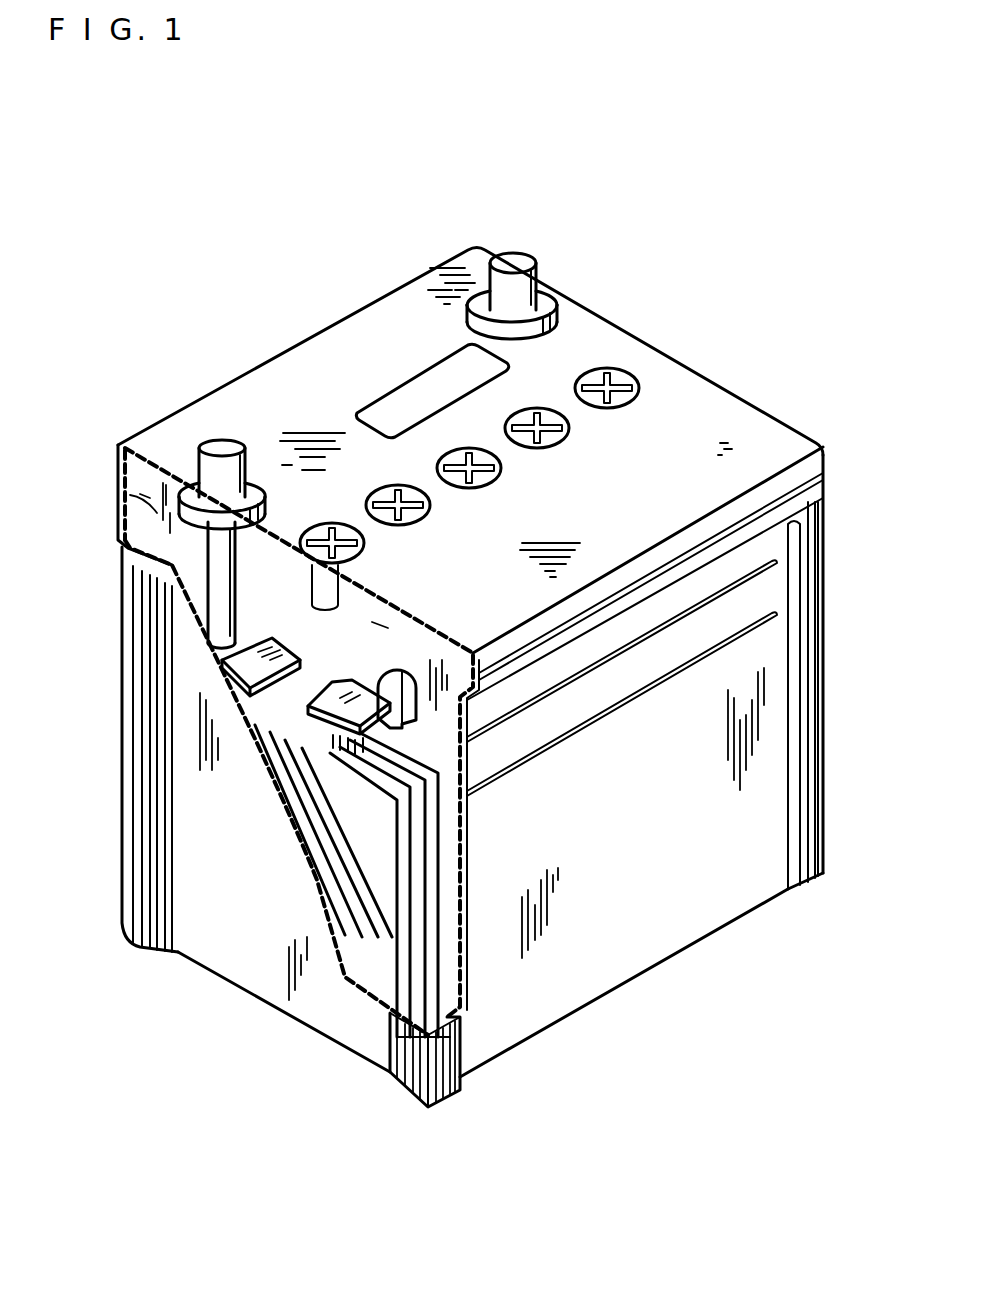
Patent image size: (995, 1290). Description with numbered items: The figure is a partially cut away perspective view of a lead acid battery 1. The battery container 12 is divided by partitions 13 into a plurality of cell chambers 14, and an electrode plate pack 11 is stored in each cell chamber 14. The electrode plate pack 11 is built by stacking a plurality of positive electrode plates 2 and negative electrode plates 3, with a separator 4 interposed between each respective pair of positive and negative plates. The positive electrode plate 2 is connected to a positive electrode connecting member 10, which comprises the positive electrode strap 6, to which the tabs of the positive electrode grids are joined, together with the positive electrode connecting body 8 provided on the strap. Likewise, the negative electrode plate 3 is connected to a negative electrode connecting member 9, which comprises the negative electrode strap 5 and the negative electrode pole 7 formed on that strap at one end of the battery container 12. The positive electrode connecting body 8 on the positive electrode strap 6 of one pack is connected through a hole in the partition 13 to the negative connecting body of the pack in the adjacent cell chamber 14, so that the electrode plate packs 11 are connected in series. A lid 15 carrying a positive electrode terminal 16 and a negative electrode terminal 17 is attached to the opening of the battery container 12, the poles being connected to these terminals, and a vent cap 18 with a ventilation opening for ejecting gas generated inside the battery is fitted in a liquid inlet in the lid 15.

The lead acid battery 1 is at (357, 273).
The positive electrode plate 2 is at (357, 902).
The negative electrode plate 3 is at (395, 930).
The separator 4 is at (397, 990).
The negative electrode strap 5 is at (240, 673).
The positive electrode strap 6 is at (348, 683).
The negative electrode pole 7 is at (220, 593).
The positive electrode connecting body 8 is at (398, 683).
The negative electrode connecting member 9 is at (63, 588).
The positive electrode connecting member 10 is at (482, 607).
The electrode plate pack 11 is at (387, 1163).
The battery container 12 is at (197, 943).
The partition 13 is at (380, 623).
The cell chamber 14 is at (140, 494).
The lid 15 is at (717, 404).
The positive electrode terminal 16 is at (513, 260).
The negative electrode terminal 17 is at (223, 447).
The vent cap 18 is at (323, 530).